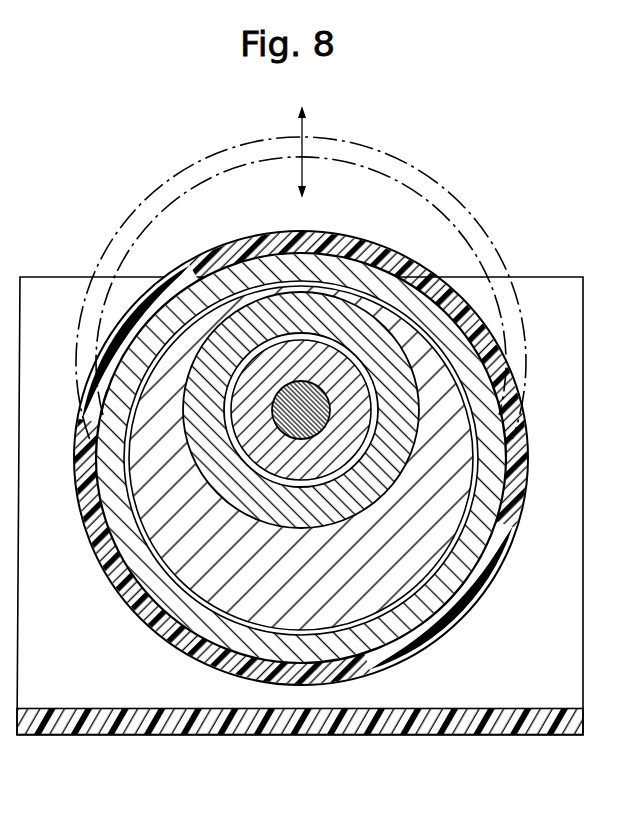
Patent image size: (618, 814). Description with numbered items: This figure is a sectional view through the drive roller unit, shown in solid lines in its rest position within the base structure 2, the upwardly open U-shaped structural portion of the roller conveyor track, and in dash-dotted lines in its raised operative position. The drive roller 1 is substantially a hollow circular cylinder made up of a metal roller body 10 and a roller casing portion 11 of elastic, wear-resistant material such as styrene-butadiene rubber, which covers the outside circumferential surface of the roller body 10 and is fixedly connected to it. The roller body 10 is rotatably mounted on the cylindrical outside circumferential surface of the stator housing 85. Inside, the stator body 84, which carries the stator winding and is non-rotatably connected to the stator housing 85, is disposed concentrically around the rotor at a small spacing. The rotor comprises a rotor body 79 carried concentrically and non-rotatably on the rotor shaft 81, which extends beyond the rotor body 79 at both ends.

The drive roller 1 is at (491, 592).
The base structure 2 is at (236, 721).
The roller body 10 is at (118, 537).
The roller casing portion 11 is at (82, 462).
The rotor body 79 is at (350, 437).
The rotor shaft 81 is at (323, 408).
The stator body 84 is at (370, 484).
The stator housing 85 is at (176, 557).